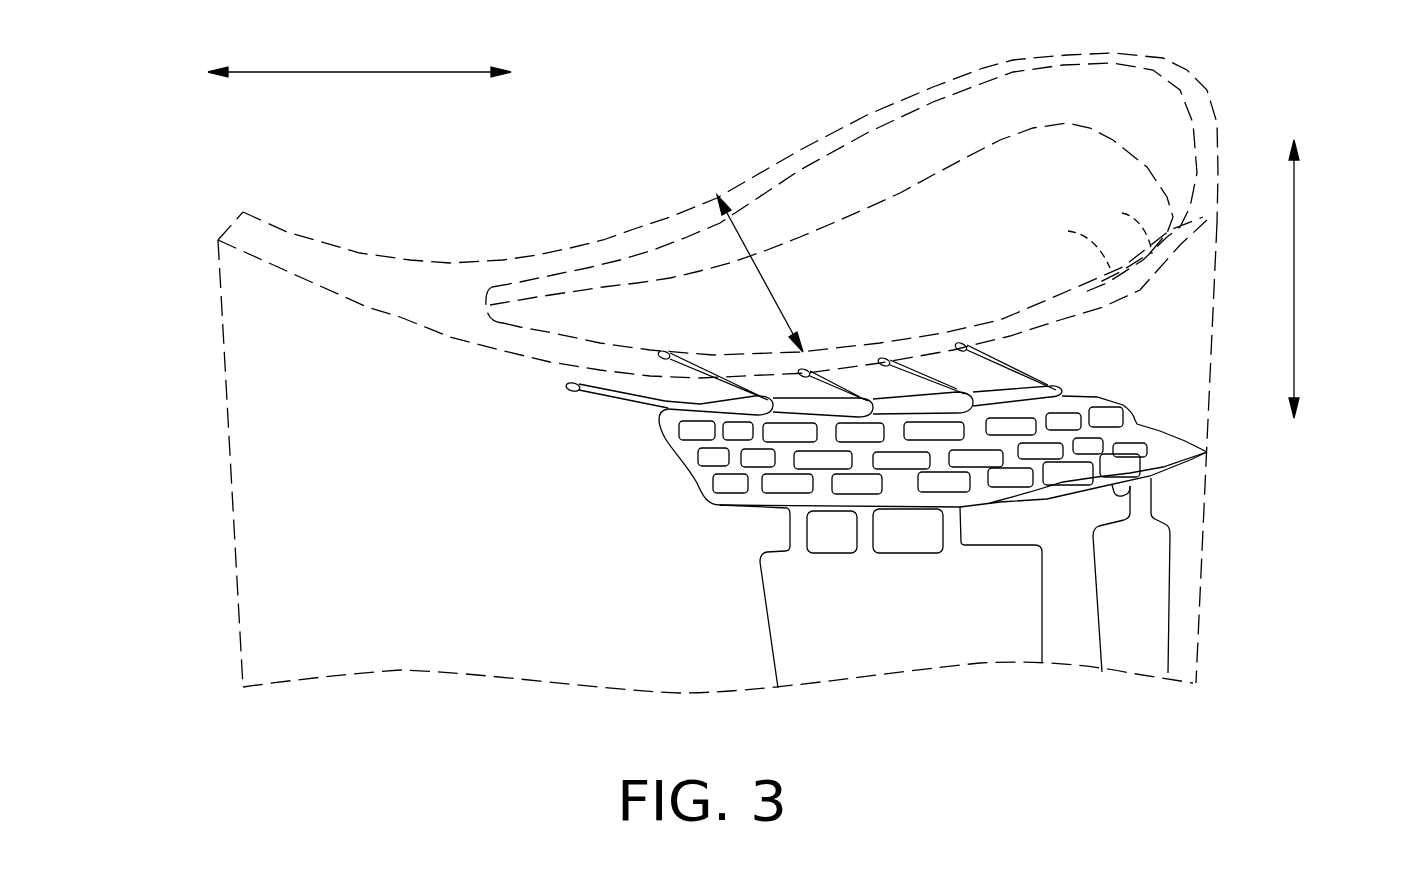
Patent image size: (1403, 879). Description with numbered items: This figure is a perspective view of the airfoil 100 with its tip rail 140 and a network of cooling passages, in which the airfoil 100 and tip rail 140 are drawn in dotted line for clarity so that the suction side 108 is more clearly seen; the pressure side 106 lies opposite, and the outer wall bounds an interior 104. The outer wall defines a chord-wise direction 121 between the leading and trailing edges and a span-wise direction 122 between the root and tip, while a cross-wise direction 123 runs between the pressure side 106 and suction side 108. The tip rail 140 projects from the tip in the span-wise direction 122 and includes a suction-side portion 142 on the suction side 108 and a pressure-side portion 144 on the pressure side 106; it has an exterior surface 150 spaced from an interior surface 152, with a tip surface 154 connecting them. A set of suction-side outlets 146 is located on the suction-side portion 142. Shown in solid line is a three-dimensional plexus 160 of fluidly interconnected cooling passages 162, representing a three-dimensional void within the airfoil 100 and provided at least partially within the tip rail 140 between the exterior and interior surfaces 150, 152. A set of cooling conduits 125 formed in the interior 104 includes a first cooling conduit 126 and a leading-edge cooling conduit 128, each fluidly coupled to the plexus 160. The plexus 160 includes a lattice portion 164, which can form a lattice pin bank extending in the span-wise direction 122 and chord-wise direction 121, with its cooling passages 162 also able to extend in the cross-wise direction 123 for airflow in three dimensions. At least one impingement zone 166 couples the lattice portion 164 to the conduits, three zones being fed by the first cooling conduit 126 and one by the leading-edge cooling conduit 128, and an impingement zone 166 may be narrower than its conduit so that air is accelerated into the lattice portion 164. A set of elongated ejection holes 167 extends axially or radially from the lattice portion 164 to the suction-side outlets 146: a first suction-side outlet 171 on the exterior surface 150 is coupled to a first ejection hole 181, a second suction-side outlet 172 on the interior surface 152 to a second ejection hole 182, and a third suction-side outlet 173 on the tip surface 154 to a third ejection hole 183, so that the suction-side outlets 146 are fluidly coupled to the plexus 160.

The airfoil 100 is at (187, 413).
The interior 104 is at (435, 578).
The pressure side 106 is at (332, 243).
The suction side 108 is at (382, 315).
The chord-wise direction 121 is at (362, 72).
The span-wise direction 122 is at (1295, 265).
The cross-wise direction 123 is at (773, 287).
The set of cooling conduits 125 is at (1114, 656).
The first cooling conduit 126 is at (920, 648).
The leading-edge cooling conduit 128 is at (1147, 628).
The tip rail 140 is at (1144, 93).
The suction-side portion 142 is at (1212, 227).
The pressure-side portion 144 is at (652, 222).
The set of suction-side outlets 146 is at (968, 316).
The exterior surface 150 is at (1112, 303).
The interior surface 152 is at (1062, 231).
The tip surface 154 is at (1120, 214).
The three-dimensional plexus 160 is at (935, 542).
The cooling passages 162 is at (967, 450).
The lattice portion 164 is at (682, 530).
The impingement zone 166 is at (786, 514).
The set of elongated ejection holes 167 is at (699, 330).
The first suction-side outlet 171 is at (590, 397).
The second suction-side outlet 172 is at (716, 388).
The third suction-side outlet 173 is at (830, 390).
The first ejection hole 181 is at (567, 386).
The second ejection hole 182 is at (661, 352).
The third ejection hole 183 is at (803, 371).